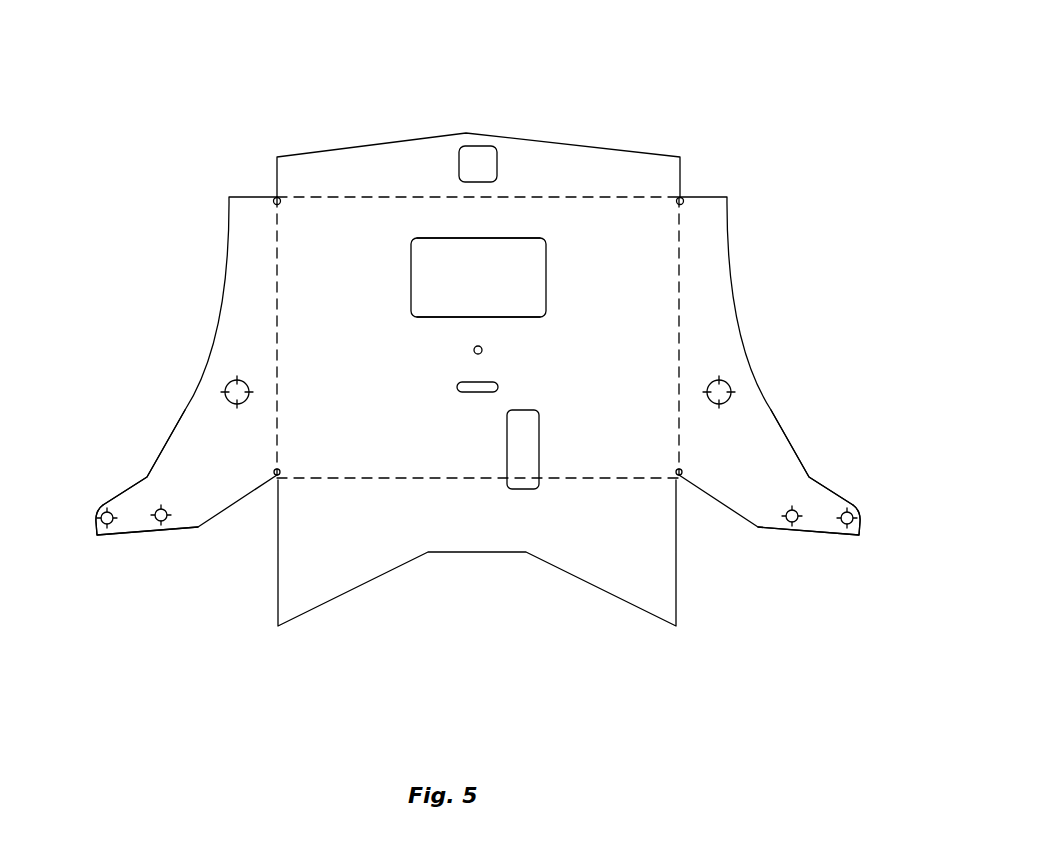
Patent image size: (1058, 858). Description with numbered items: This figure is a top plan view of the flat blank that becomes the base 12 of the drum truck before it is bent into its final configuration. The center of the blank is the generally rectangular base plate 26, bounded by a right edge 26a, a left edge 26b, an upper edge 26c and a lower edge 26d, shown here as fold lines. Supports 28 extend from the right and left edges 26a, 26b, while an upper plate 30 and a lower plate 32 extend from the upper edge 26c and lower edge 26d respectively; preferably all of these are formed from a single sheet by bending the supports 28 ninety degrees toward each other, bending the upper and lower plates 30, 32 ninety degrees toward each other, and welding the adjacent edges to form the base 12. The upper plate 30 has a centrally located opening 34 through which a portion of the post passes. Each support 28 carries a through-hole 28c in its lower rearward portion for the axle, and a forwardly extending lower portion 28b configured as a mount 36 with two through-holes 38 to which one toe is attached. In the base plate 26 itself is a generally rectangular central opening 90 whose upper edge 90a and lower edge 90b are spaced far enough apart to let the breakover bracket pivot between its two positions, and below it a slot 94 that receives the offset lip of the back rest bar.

The base 12 is at (697, 72).
The base plate 26 is at (480, 380).
The right edge 26a is at (682, 312).
The left edge 26b is at (273, 312).
The upper edge 26c is at (362, 195).
The lower edge 26d is at (375, 480).
The support 28 is at (216, 352).
The lower portion 28b is at (145, 468).
The through-hole 28c is at (233, 390).
The upper plate 30 is at (567, 153).
The lower plate 32 is at (606, 575).
The opening 34 is at (483, 153).
The mount 36 is at (140, 525).
The through-holes 38 is at (105, 521).
The central opening 90 is at (435, 276).
The upper edge 90a is at (486, 238).
The lower edge 90b is at (516, 318).
The slot 94 is at (462, 386).